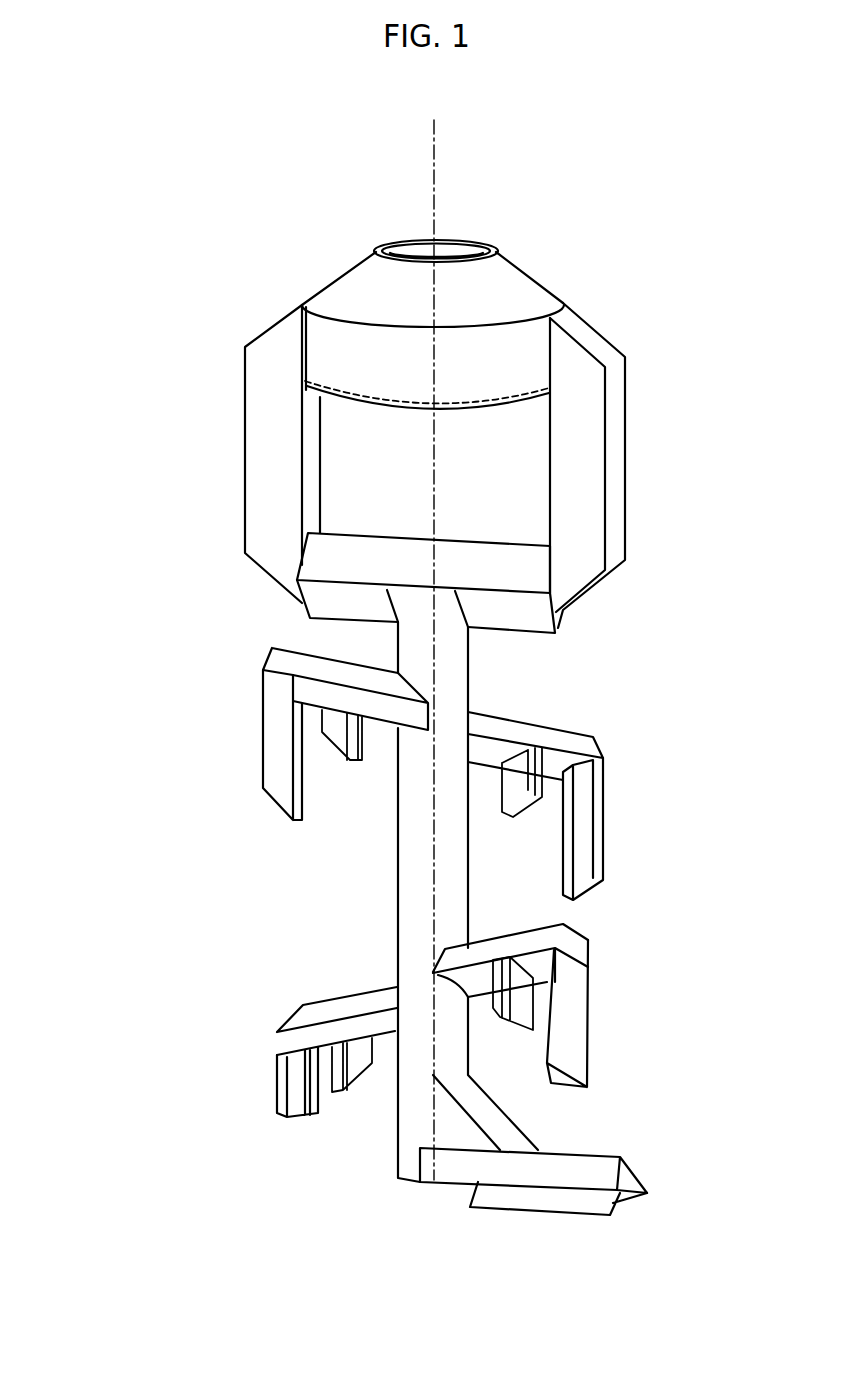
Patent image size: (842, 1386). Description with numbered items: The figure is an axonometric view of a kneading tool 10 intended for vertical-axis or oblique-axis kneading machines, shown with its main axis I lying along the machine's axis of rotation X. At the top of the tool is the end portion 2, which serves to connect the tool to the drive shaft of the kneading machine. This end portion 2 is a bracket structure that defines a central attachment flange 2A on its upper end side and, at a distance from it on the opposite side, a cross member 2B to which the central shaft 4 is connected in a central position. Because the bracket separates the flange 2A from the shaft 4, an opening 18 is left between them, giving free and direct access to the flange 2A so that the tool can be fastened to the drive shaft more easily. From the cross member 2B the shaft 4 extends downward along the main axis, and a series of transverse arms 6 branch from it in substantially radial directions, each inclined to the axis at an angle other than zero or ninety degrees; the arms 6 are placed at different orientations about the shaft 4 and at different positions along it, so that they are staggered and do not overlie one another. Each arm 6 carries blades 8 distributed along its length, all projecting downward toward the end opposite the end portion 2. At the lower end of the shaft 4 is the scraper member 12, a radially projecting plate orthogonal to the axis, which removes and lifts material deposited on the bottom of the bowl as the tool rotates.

The kneading tool 10 is at (202, 324).
The end portion 2 is at (633, 443).
The central attachment flange 2A is at (470, 372).
The cross member 2B is at (377, 562).
The opening 18 is at (520, 495).
The central shaft 4 is at (408, 862).
The transverse arms 6 is at (262, 654).
The blades 8 is at (275, 765).
The scraper member 12 is at (652, 1178).